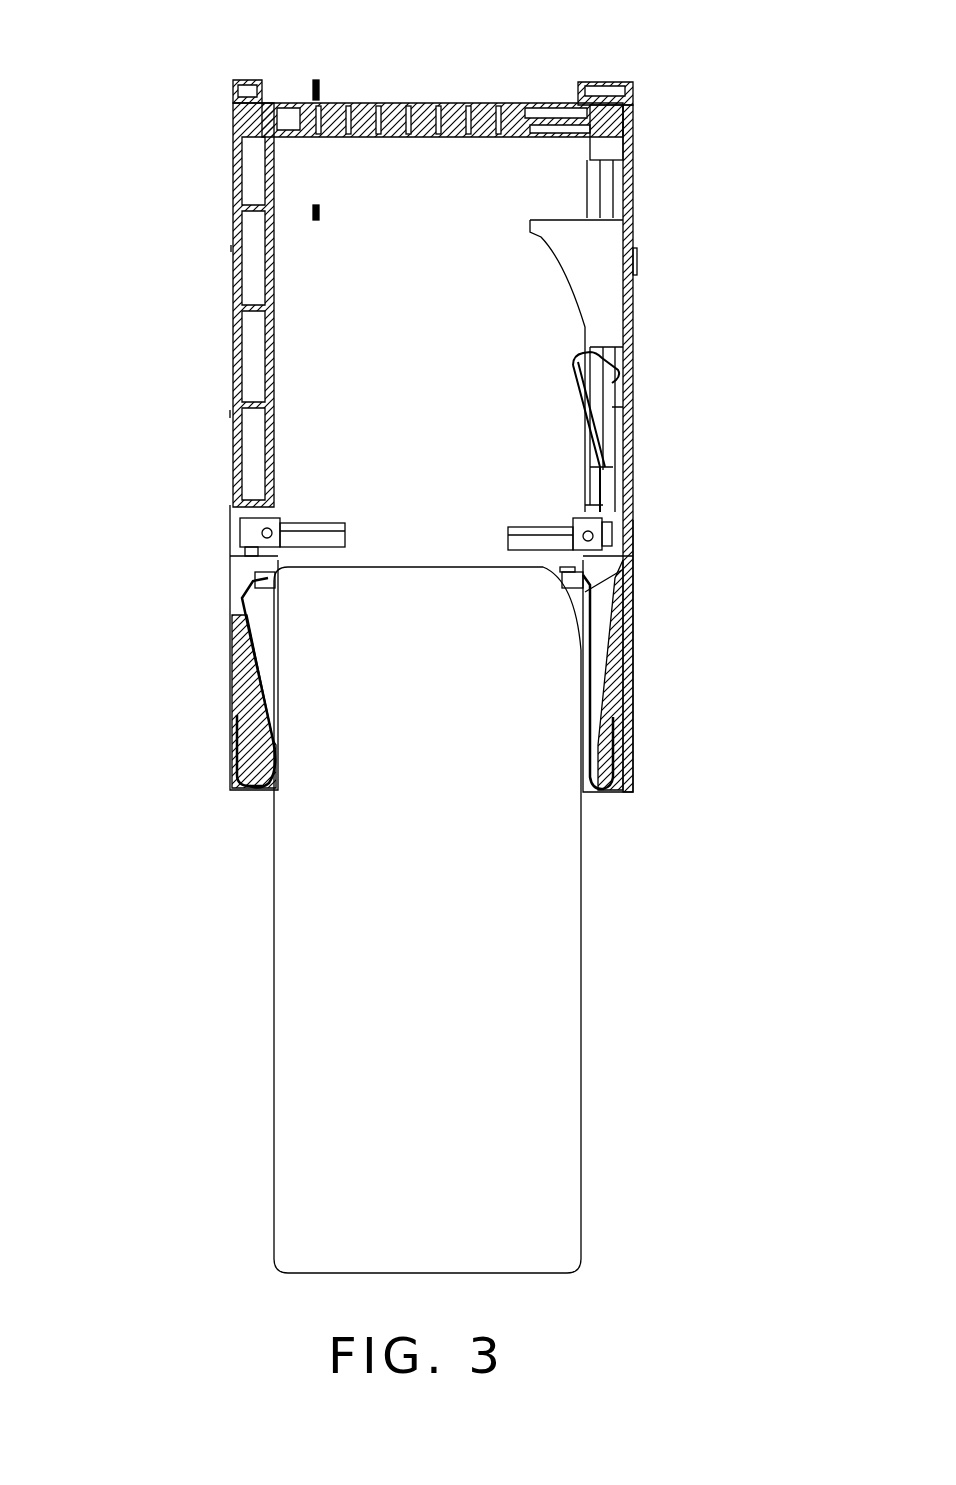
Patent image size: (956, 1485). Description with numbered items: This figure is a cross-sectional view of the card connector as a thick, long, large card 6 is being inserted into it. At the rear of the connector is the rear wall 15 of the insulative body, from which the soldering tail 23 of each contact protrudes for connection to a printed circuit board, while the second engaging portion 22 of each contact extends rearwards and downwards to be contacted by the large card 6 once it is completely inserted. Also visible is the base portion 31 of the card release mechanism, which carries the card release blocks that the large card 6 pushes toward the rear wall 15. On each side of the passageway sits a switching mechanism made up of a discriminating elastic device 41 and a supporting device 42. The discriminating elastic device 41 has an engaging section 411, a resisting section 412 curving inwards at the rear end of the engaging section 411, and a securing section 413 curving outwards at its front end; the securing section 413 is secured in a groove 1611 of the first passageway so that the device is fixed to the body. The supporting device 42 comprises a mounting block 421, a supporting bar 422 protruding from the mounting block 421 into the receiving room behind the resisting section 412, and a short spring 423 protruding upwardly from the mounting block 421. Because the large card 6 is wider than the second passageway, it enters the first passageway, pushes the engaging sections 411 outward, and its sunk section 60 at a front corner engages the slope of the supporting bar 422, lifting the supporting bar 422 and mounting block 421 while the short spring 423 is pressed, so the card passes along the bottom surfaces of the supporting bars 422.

The rear wall 15 is at (444, 103).
The soldering tail 23 is at (316, 80).
The second engaging portion 22 is at (312, 210).
The base portion 31 is at (570, 272).
The supporting device 42 is at (245, 525).
The supporting bar 422 is at (318, 540).
The resisting section 412 is at (265, 578).
The short spring 423 is at (605, 515).
The mounting block 421 is at (607, 530).
The sunk section 60 is at (590, 595).
The discriminating elastic device 41 is at (618, 640).
The securing section 413 is at (618, 722).
The engaging section 411 is at (237, 716).
The groove 1611 is at (237, 770).
The large card 6 is at (535, 923).